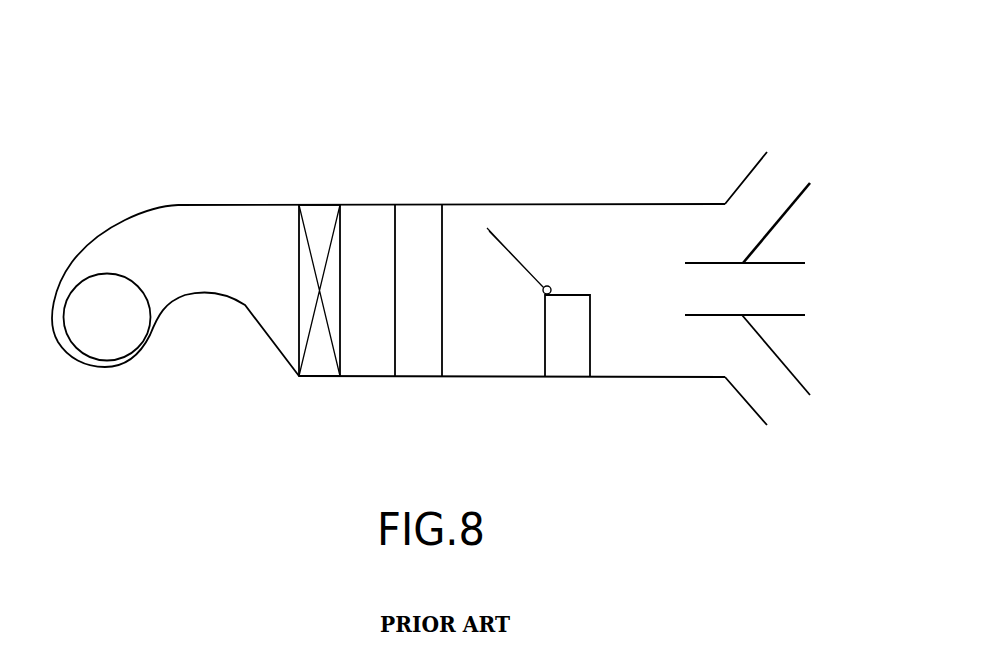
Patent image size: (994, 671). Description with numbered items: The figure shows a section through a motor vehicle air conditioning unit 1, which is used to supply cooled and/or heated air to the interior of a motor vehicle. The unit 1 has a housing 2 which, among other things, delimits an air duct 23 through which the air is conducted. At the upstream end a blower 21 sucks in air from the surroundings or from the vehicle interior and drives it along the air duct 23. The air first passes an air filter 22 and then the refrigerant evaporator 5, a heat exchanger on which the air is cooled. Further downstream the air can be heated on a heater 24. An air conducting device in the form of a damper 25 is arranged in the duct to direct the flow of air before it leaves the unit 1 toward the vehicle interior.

The motor vehicle air conditioning unit 1 is at (431, 220).
The housing 2 is at (182, 205).
The refrigerant evaporator 5 is at (418, 225).
The blower 21 is at (115, 337).
The air filter 22 is at (320, 212).
The air duct 23 is at (368, 345).
The heater 24 is at (568, 348).
The damper 25 is at (515, 257).